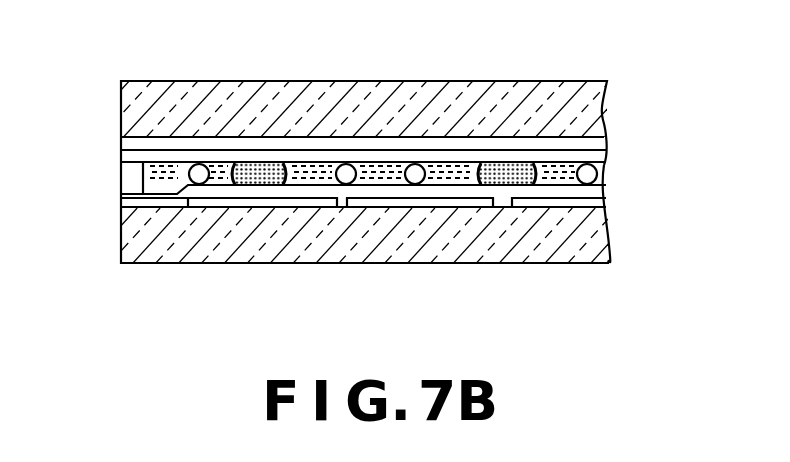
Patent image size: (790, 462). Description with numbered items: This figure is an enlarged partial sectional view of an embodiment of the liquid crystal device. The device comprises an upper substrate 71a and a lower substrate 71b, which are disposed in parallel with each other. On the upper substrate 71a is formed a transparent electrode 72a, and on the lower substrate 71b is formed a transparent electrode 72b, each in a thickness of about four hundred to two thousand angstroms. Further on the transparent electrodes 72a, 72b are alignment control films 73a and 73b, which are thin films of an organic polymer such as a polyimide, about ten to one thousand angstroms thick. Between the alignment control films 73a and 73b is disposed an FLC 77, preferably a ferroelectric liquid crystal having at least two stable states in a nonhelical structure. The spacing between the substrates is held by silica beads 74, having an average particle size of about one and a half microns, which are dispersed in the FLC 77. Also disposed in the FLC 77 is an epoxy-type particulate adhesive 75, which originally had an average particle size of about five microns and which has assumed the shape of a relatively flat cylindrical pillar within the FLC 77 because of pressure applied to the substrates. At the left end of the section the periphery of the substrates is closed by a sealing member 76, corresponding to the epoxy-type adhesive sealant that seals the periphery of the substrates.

The upper substrate 71a is at (596, 82).
The lower substrate 71b is at (605, 242).
The transparent electrode 72a is at (603, 141).
The transparent electrode 72b is at (603, 204).
The alignment control film 73a is at (605, 159).
The alignment control film 73b is at (605, 187).
The silica beads 74 is at (416, 172).
The particulate adhesive 75 is at (507, 173).
The sealing member 76 is at (135, 181).
The FLC 77 is at (163, 172).